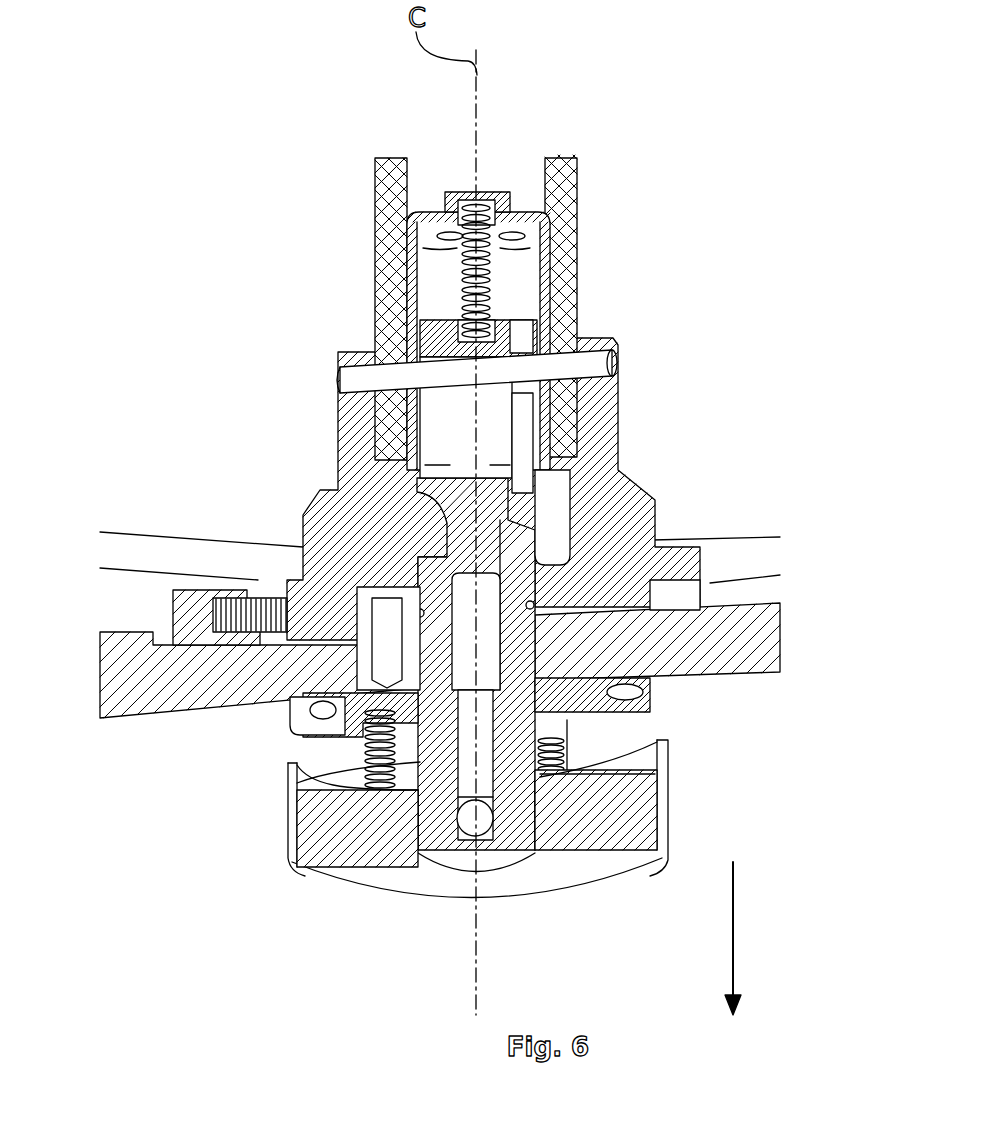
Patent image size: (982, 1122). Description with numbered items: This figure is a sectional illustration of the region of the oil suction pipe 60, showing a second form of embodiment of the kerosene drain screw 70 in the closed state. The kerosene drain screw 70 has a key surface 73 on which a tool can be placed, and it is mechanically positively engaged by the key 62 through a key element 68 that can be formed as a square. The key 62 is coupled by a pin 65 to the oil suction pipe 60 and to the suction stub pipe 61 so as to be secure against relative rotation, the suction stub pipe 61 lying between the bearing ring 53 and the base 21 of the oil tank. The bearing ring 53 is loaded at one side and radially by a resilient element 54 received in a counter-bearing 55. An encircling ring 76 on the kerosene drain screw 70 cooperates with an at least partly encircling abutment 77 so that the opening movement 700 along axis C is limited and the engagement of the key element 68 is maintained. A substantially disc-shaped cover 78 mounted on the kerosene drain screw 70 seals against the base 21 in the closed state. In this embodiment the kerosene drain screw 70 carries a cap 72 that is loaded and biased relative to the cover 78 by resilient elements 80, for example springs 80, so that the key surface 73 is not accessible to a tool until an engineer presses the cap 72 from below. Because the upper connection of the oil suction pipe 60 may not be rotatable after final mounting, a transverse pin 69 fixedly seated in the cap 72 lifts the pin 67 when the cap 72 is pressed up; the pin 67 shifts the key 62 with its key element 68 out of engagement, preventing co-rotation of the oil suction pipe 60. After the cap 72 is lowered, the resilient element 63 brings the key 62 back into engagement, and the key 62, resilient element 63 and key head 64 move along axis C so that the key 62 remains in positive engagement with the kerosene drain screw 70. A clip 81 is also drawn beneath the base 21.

The base 21 is at (745, 660).
The bearing ring 53 is at (313, 525).
The resilient element 54 is at (230, 633).
The counter-bearing 55 is at (170, 600).
The oil suction pipe 60 is at (562, 158).
The suction stub pipe 61 is at (597, 423).
The key 62 is at (492, 507).
The resilient element 63 is at (481, 205).
The key head 64 is at (440, 332).
The pin 65 is at (598, 360).
The pin 67 is at (457, 757).
The key element 68 is at (500, 530).
The transverse pin 69 is at (463, 822).
The kerosene drain screw 70 is at (572, 832).
The cap 72 is at (590, 868).
The key surface 73 is at (548, 830).
The encircling ring 76 is at (345, 650).
The abutment 77 is at (533, 642).
The cover 78 is at (420, 738).
The resilient elements 80 is at (300, 783).
The clip 81 is at (657, 685).
The opening movement 700 is at (733, 945).